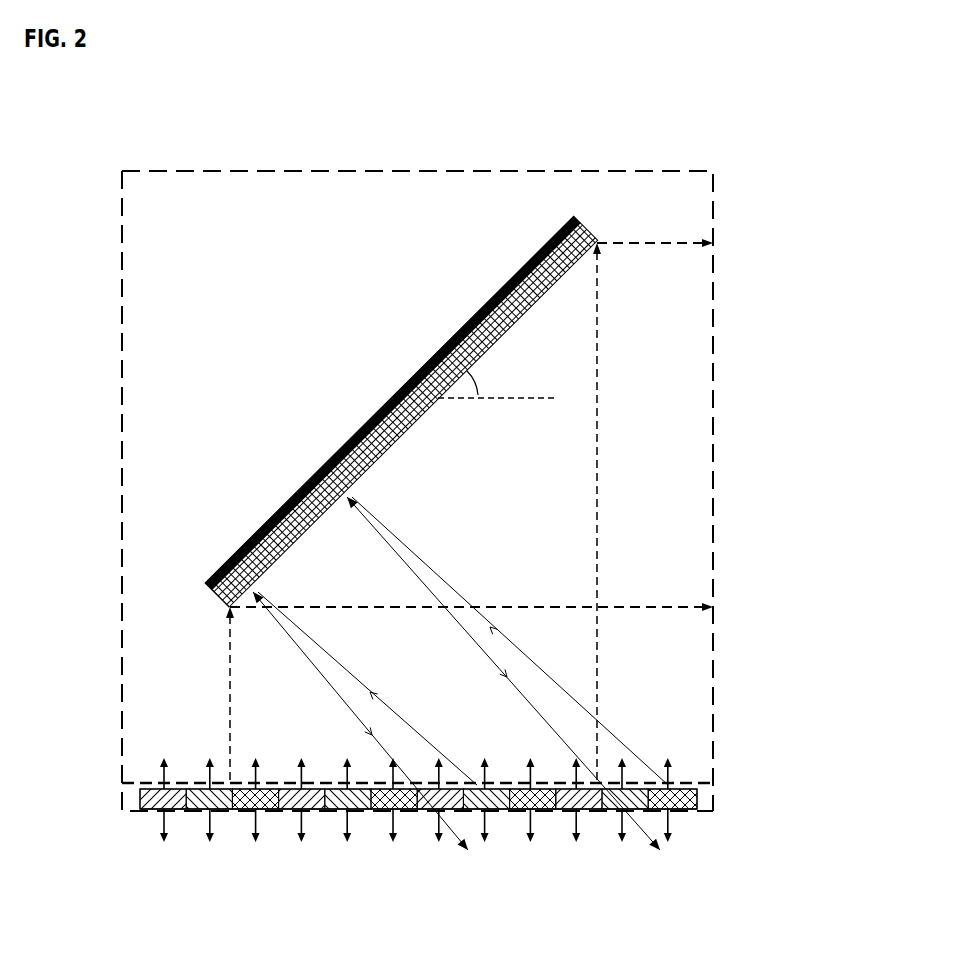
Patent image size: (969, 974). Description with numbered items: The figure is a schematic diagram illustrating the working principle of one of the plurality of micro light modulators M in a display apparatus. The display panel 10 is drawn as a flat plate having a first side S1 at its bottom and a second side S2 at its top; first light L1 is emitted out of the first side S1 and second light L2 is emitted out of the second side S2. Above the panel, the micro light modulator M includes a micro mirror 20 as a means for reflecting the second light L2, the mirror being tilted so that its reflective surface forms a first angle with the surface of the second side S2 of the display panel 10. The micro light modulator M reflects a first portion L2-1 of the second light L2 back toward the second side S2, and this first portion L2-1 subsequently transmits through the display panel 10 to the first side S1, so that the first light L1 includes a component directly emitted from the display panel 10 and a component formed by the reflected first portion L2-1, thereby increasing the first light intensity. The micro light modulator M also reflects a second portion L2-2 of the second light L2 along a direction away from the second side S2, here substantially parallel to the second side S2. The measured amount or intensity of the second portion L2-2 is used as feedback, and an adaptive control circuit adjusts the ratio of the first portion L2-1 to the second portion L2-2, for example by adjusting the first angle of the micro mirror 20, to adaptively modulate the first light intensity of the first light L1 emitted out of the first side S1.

The display panel 10 is at (713, 797).
The micro mirror 20 is at (410, 425).
The micro light modulator M is at (410, 171).
The first light L1 is at (416, 816).
The second light L2 is at (456, 673).
The first portion of the second light L2-1 is at (463, 641).
The second portion of the second light L2-2 is at (469, 511).
The first side S1 is at (447, 847).
The second side S2 is at (438, 756).